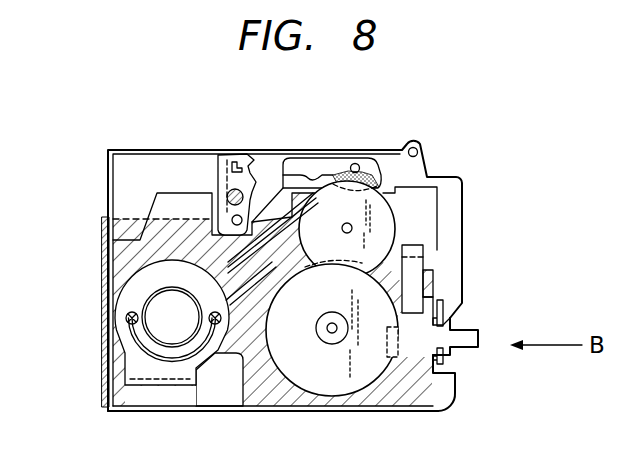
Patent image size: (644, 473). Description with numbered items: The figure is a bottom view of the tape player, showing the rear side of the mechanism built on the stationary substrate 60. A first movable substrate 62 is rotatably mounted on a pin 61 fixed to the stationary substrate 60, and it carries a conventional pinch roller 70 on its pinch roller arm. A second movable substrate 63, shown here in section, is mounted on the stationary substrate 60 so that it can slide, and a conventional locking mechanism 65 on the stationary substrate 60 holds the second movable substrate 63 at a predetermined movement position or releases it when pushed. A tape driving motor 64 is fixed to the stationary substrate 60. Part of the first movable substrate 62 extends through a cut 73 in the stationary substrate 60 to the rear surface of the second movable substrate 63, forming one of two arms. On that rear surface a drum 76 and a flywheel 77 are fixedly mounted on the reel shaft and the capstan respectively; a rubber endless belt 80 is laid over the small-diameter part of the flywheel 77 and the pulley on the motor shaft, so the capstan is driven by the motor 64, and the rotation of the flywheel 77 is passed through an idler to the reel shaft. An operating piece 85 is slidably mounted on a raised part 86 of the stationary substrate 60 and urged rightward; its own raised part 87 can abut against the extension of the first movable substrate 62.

The stationary substrate 60 is at (462, 204).
The pin 61 is at (418, 148).
The first movable substrate 62 is at (320, 158).
The second movable substrate 63 is at (407, 396).
The tape driving motor 64 is at (124, 299).
The locking mechanism 65 is at (236, 156).
The pinch roller 70 is at (360, 172).
The cut 73 is at (401, 204).
The drum 76 is at (319, 397).
The flywheel 77 is at (388, 228).
The rubber endless belt 80 is at (262, 318).
The operating piece 85 is at (483, 333).
The raised part 86 is at (445, 358).
The raised part 87 is at (446, 302).